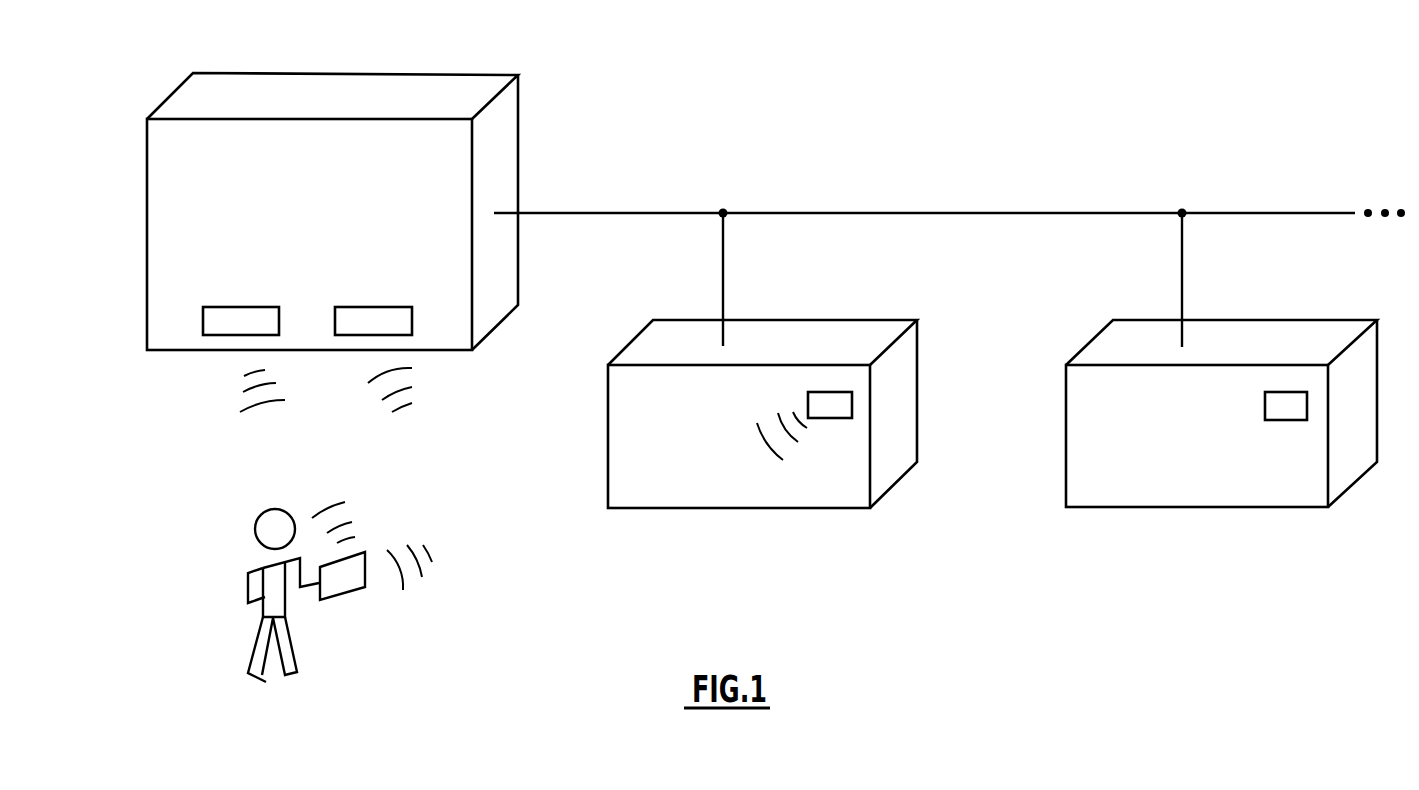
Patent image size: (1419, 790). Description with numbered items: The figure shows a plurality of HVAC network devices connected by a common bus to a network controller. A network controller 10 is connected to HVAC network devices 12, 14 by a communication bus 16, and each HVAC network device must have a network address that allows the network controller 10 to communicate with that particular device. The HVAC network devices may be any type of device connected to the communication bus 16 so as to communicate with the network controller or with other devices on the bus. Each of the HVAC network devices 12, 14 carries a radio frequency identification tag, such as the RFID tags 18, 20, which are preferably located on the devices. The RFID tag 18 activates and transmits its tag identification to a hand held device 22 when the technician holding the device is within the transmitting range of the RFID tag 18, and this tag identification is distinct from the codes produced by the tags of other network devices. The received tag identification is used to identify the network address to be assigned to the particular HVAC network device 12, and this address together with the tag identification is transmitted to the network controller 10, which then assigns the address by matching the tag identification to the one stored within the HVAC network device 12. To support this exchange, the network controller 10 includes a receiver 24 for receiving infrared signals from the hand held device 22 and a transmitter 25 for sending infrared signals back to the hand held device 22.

The network controller 10 is at (487, 85).
The HVAC network device 12 is at (885, 320).
The HVAC network device 14 is at (1342, 320).
The communication bus 16 is at (768, 213).
The RFID tag 18 is at (825, 418).
The RFID tag 20 is at (1283, 420).
The hand held device 22 is at (366, 552).
The receiver 24 is at (392, 305).
The transmitter 25 is at (258, 305).